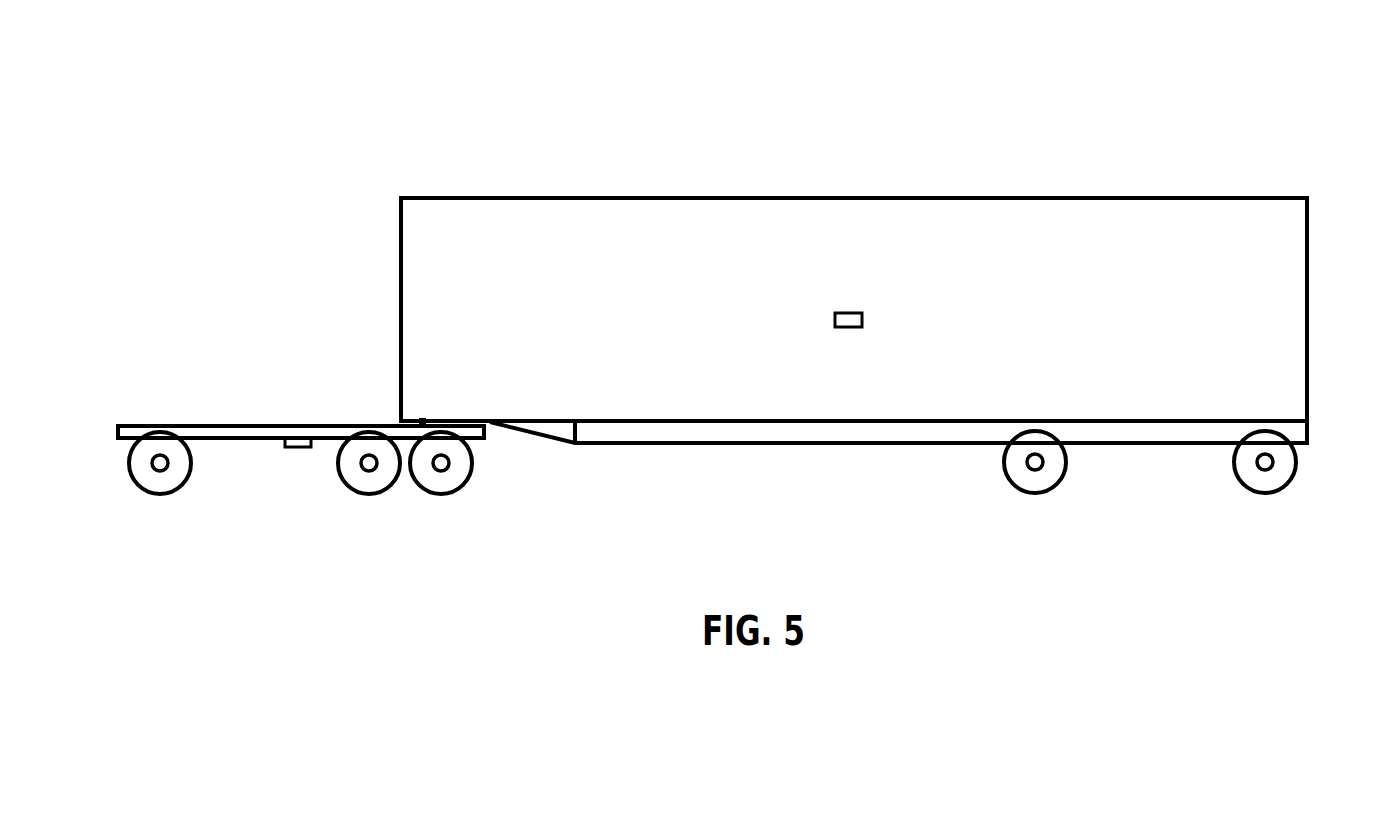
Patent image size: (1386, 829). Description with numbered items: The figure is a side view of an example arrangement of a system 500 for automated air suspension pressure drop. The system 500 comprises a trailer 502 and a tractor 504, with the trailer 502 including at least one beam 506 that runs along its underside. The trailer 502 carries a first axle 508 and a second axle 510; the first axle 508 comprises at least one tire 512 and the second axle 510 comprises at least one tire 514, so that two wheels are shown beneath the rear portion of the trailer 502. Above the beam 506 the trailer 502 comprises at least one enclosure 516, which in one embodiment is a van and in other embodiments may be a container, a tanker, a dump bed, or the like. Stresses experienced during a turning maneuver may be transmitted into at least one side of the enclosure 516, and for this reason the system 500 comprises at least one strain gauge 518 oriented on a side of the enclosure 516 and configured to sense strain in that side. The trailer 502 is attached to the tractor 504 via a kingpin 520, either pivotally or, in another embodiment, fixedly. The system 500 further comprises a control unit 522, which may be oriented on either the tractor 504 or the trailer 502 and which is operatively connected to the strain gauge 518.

The system 500 is at (558, 128).
The trailer 502 is at (1248, 178).
The tractor 504 is at (236, 406).
The beam 506 is at (1122, 433).
The first axle 508 is at (1270, 466).
The second axle 510 is at (1031, 470).
The tire 512 is at (1262, 483).
The tire 514 is at (1042, 482).
The enclosure 516 is at (928, 207).
The strain gauge 518 is at (846, 328).
The kingpin 520 is at (424, 420).
The control unit 522 is at (298, 449).